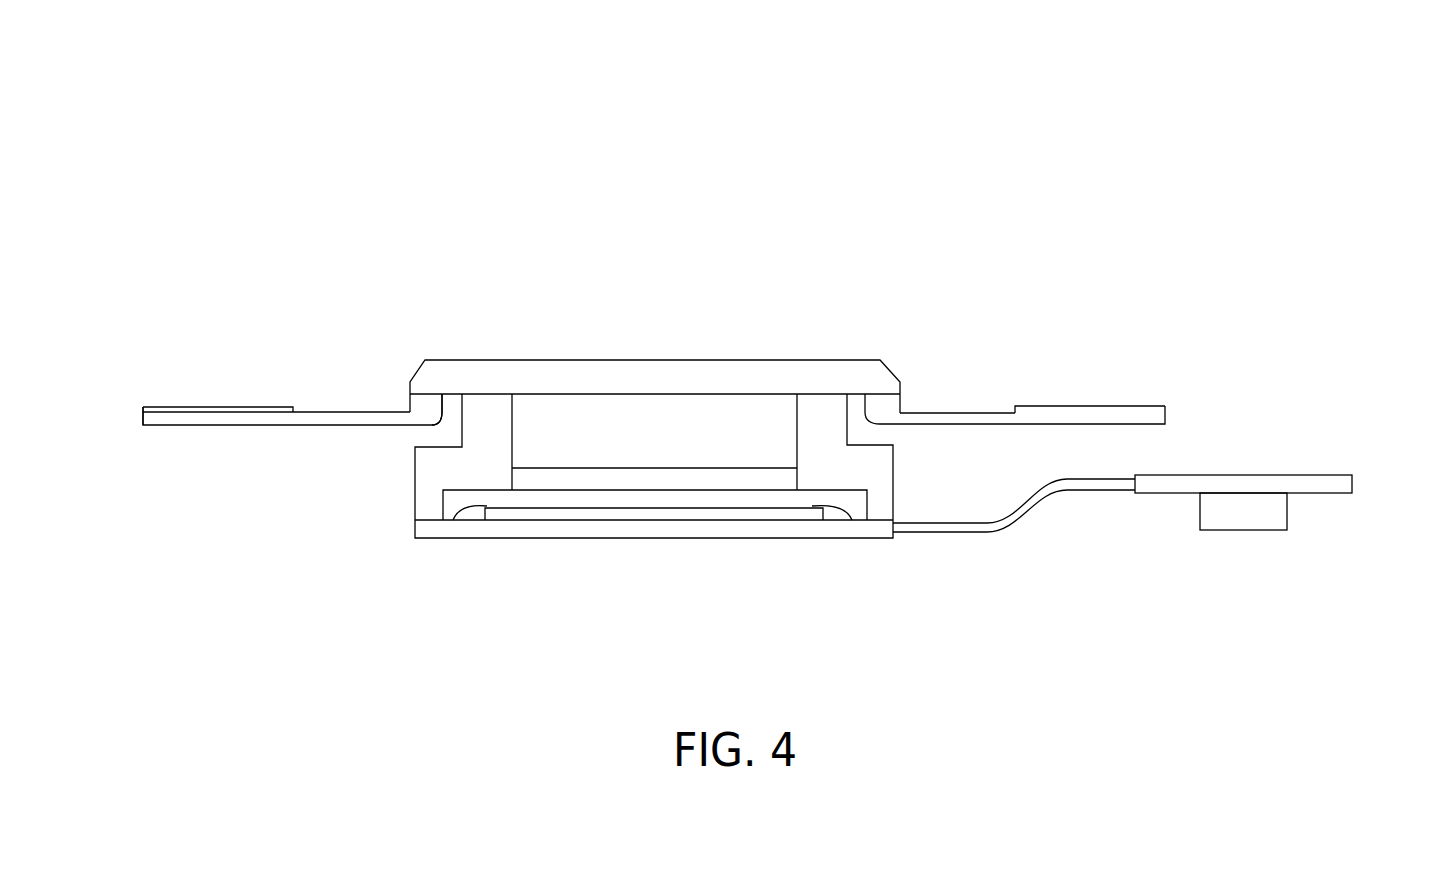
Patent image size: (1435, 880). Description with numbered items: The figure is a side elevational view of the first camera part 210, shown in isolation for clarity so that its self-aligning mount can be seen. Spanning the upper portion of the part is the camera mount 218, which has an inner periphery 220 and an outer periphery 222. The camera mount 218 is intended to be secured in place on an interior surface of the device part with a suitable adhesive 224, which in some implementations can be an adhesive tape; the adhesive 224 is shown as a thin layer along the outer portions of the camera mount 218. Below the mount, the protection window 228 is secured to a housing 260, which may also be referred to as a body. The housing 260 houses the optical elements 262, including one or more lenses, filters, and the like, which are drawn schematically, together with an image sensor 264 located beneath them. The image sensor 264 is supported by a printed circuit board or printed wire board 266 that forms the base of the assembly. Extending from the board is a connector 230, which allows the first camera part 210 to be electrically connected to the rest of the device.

The first camera part 210 is at (1224, 159).
The camera mount 218 is at (288, 427).
The inner periphery 220 is at (443, 399).
The outer periphery 222 is at (143, 416).
The adhesive 224 is at (168, 405).
The protection window 228 is at (730, 360).
The connector 230 is at (1300, 493).
The housing 260 is at (895, 488).
The optical elements 262 is at (565, 405).
The image sensor 264 is at (518, 503).
The printed circuit board or printed wire board 266 is at (672, 540).